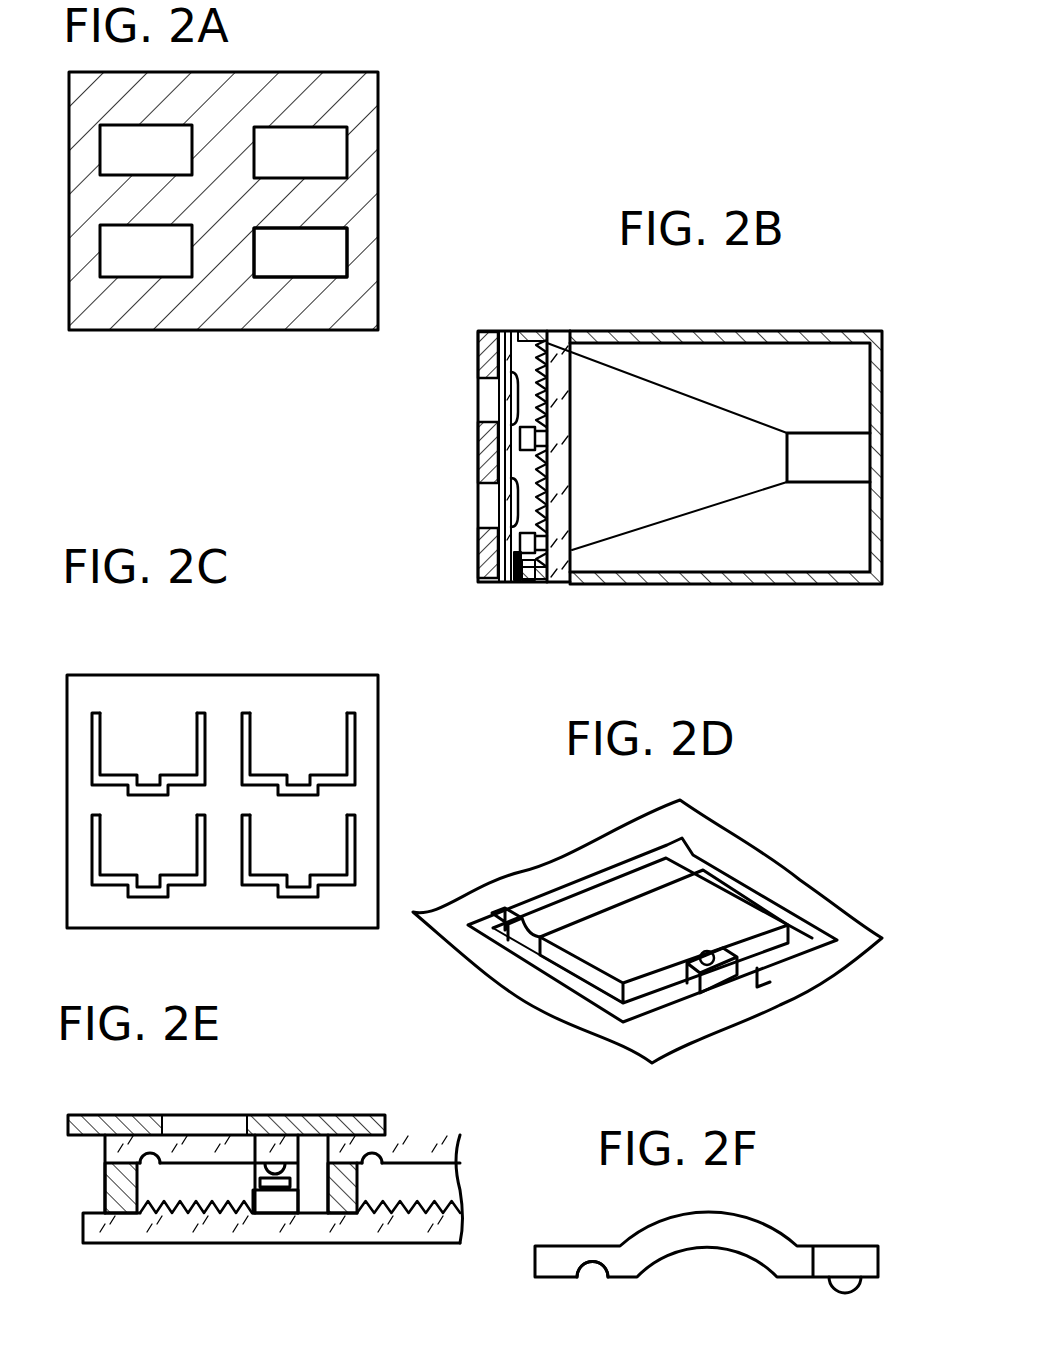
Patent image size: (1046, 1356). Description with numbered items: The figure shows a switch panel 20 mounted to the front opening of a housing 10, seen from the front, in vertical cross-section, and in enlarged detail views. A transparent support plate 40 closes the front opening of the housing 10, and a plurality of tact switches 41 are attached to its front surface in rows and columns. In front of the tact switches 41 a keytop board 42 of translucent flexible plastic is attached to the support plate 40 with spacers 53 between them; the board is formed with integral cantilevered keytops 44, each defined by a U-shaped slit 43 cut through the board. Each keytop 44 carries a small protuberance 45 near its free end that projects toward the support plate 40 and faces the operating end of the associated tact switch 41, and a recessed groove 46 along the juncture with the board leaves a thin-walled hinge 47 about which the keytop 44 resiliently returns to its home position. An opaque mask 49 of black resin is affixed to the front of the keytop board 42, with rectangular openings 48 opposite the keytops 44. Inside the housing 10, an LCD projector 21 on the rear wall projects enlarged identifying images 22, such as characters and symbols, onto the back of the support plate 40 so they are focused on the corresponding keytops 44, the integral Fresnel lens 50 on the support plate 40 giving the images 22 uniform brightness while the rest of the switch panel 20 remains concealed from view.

In FIG. 2B, the housing 10 is at (703, 331).
In FIG. 2B, the switch panel 20 is at (567, 327).
In FIG. 2B, the LCD projector 21 is at (825, 473).
In FIG. 2A, the images 22 is at (298, 138).
In FIG. 2B, the transparent support plate 40 is at (557, 580).
In FIG. 2B, the tact switch 41 is at (573, 523).
In FIG. 2E, the tact switch 41 is at (280, 1203).
In FIG. 2B, the keytop board 42 is at (520, 553).
In FIG. 2C, the keytop board 42 is at (188, 690).
In FIG. 2E, the keytop board 42 is at (112, 1147).
In FIG. 2C, the U-shaped slit 43 is at (103, 748).
In FIG. 2D, the U-shaped slit 43 is at (540, 970).
In FIG. 2A, the keytop 44 is at (332, 238).
In FIG. 2B, the keytop 44 is at (508, 498).
In FIG. 2C, the keytop 44 is at (302, 750).
In FIG. 2D, the keytop 44 is at (623, 967).
In FIG. 2E, the keytop 44 is at (227, 1145).
In FIG. 2F, the keytop 44 is at (743, 1232).
In FIG. 2B, the protuberance 45 is at (518, 575).
In FIG. 2D, the protuberance 45 is at (712, 965).
In FIG. 2E, the protuberance 45 is at (290, 1168).
In FIG. 2F, the protuberance 45 is at (838, 1290).
In FIG. 2D, the recessed groove 46 is at (605, 900).
In FIG. 2D, the thin-walled hinge 47 is at (528, 940).
In FIG. 2E, the thin-walled hinge 47 is at (147, 1143).
In FIG. 2F, the thin-walled hinge 47 is at (590, 1255).
In FIG. 2A, the rectangular opening 48 is at (337, 258).
In FIG. 2B, the rectangular opening 48 is at (478, 392).
In FIG. 2E, the rectangular opening 48 is at (175, 1118).
In FIG. 2A, the mask 49 is at (362, 95).
In FIG. 2B, the mask 49 is at (478, 356).
In FIG. 2E, the mask 49 is at (323, 1127).
In FIG. 2B, the Fresnel lens 50 is at (540, 508).
In FIG. 2E, the Fresnel lens 50 is at (235, 1214).
In FIG. 2B, the spacer 53 is at (528, 582).
In FIG. 2E, the spacer 53 is at (125, 1200).